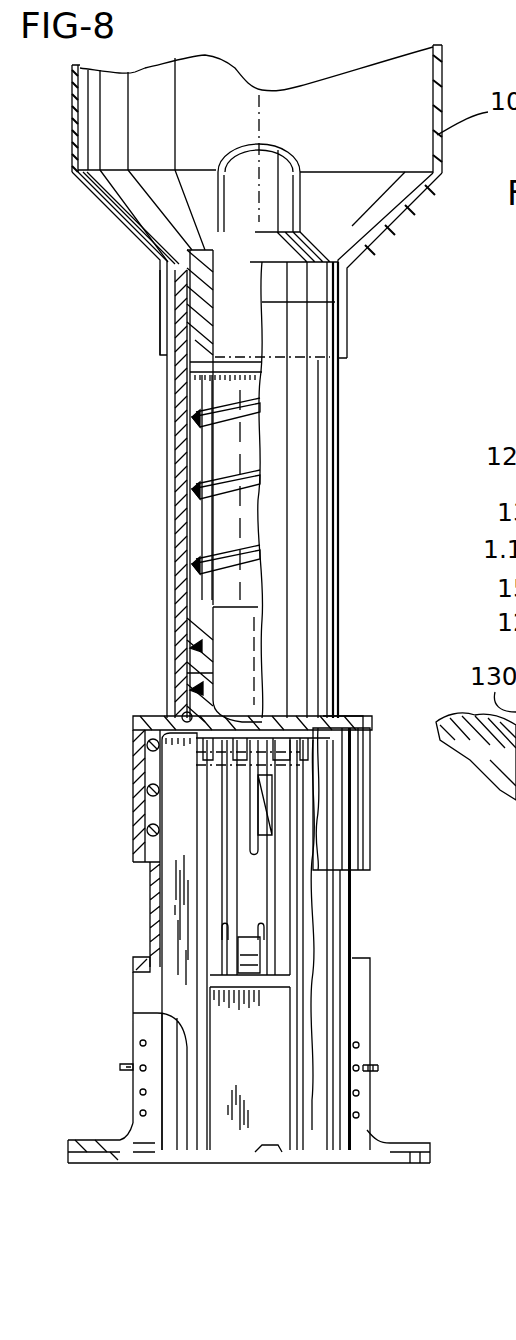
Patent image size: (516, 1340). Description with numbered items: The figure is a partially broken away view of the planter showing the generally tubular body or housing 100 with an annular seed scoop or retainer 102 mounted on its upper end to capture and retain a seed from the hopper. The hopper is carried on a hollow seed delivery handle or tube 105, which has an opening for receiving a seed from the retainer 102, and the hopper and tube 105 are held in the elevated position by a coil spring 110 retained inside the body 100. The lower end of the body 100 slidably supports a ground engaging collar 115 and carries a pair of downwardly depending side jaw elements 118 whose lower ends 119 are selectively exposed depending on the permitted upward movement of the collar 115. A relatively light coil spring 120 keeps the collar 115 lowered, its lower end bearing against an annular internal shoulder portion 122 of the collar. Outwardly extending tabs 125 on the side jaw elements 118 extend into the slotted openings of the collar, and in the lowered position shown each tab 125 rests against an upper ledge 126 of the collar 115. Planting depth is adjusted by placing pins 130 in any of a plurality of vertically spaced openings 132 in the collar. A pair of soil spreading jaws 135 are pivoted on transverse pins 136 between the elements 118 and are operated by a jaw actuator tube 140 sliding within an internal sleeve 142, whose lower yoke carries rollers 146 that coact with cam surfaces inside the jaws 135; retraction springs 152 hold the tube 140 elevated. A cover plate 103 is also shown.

The tubular body 100 is at (180, 535).
The annular seed scoop 102 is at (188, 287).
The cover plate 103 is at (178, 733).
The seed delivery tube 105 is at (272, 199).
The coil spring 110 is at (207, 410).
The ground engaging collar 115 is at (362, 902).
The side jaw elements 118 is at (192, 1128).
The lower ends 119 is at (207, 1130).
The coil spring 120 is at (150, 817).
The annular internal shoulder portion 122 is at (152, 868).
The tabs 125 is at (150, 998).
The upper ledge 126 is at (135, 960).
The pins 130 is at (125, 1068).
The openings 132 is at (366, 1115).
The soil spreading jaws 135 is at (265, 1122).
The pins 136 is at (248, 762).
The jaw actuator tube 140 is at (242, 662).
The sleeve 142 is at (207, 675).
The rollers 146 is at (250, 955).
The retraction springs 152 is at (275, 823).